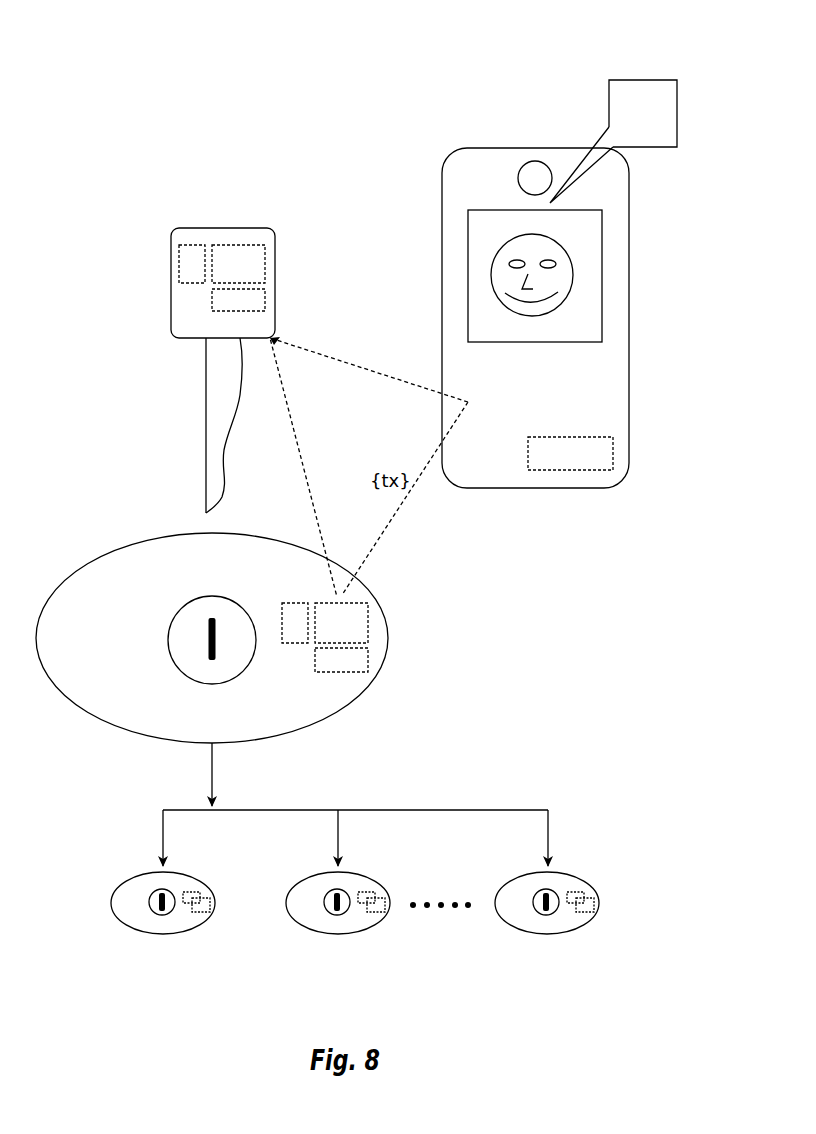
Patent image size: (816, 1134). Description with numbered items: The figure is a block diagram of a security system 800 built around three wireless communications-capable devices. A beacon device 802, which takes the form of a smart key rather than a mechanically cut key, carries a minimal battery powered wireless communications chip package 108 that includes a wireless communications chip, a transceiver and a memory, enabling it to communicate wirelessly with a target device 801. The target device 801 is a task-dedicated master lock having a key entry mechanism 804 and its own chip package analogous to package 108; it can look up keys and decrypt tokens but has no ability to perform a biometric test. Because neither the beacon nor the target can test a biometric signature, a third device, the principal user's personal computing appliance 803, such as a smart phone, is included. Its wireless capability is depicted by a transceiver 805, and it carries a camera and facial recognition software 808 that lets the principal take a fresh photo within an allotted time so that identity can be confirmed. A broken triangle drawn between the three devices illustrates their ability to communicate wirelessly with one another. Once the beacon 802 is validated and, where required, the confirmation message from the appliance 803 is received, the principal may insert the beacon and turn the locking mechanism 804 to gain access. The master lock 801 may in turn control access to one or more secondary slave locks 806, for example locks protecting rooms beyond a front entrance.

The security system 800 is at (336, 92).
The facial recognition software 808 is at (678, 118).
The personal computing appliance 803 is at (440, 218).
The transceiver 805 is at (570, 435).
The beacon device 802 is at (172, 280).
The wireless communications chip package 108 is at (193, 296).
The target device 801 is at (388, 640).
The key entry mechanism 804 is at (168, 642).
The slave locks 806 is at (131, 850).